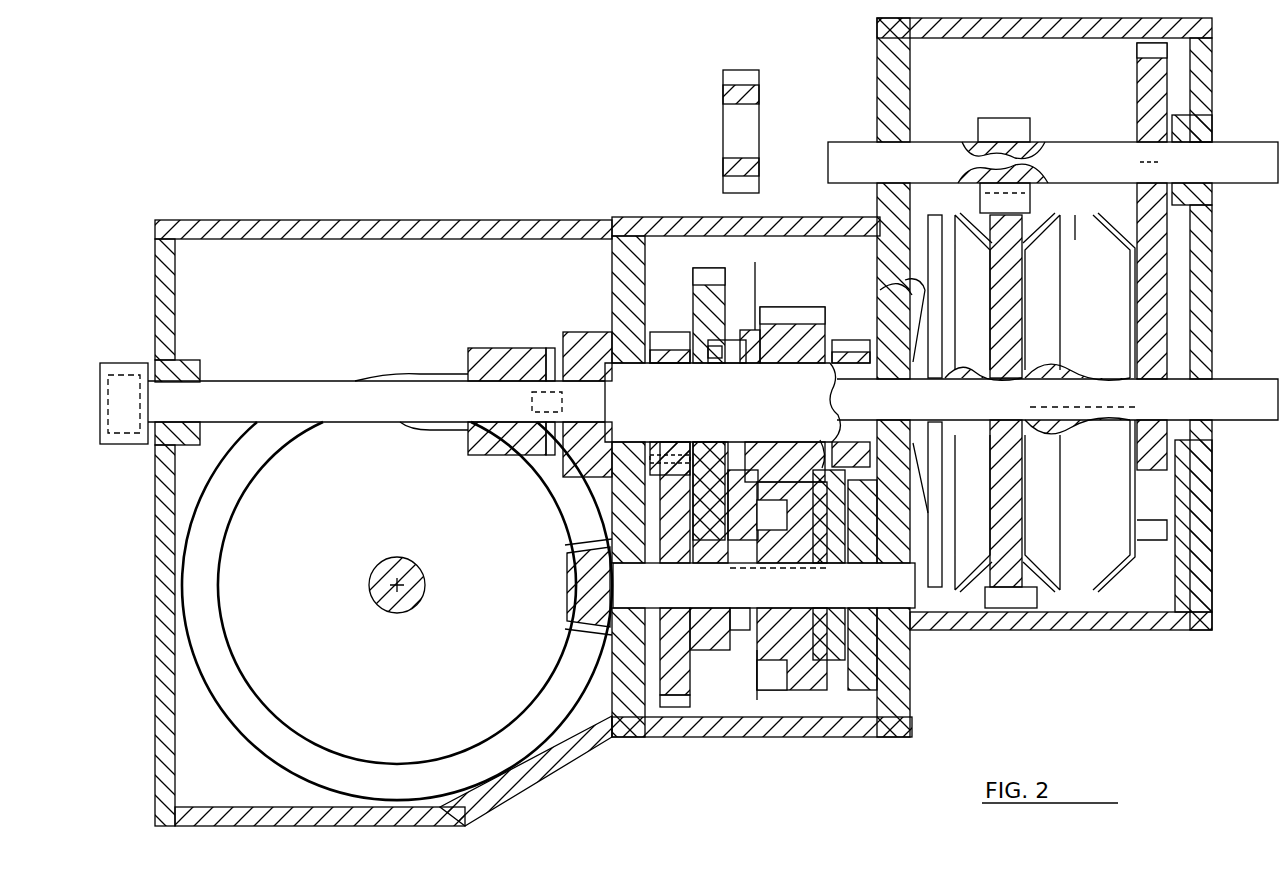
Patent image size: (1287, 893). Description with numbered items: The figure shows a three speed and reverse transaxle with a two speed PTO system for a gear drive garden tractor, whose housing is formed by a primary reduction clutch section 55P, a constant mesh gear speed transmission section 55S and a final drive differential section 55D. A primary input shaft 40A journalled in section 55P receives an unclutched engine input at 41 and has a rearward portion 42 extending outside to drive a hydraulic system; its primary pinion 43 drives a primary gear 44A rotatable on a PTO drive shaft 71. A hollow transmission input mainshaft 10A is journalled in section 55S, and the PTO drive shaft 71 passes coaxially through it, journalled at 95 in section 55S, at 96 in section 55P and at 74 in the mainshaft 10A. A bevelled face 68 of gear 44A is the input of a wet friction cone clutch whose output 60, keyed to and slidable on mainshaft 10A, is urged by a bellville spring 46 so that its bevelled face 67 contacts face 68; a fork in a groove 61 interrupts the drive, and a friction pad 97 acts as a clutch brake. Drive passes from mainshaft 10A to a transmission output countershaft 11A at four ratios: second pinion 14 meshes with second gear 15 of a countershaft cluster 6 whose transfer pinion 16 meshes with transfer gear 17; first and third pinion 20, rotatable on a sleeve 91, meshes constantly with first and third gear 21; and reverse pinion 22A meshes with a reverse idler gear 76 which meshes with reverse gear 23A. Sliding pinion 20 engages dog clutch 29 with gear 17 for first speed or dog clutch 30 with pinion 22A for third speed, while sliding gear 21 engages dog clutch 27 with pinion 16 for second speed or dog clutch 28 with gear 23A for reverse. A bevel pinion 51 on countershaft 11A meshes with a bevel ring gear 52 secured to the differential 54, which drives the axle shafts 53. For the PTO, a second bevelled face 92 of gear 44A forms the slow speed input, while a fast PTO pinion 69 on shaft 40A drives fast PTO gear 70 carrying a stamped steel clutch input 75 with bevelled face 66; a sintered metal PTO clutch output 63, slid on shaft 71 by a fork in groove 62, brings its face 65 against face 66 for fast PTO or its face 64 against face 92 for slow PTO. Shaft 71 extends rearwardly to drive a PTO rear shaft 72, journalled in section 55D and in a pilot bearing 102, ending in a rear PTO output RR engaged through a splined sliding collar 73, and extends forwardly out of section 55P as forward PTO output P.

The final drive differential section 55D is at (305, 225).
The rear PTO output RR is at (118, 444).
The PTO rear shaft 72 is at (245, 385).
The bevel ring gear 52 is at (525, 712).
The differential 54 is at (300, 735).
The axle shafts 53 is at (425, 585).
The bevel pinion 51 is at (560, 628).
The axially slidable collar 73 is at (495, 355).
The pilot bearing 102 is at (553, 403).
The journal in housing section 55S 95 is at (580, 340).
The constant mesh gear speed transmission section 55S is at (800, 735).
The hollow transmission input mainshaft 10A is at (722, 402).
The sleeve 91 is at (800, 365).
The dog clutch 30 is at (815, 448).
The dog clutch 29 is at (740, 365).
The second pinion 14 is at (667, 340).
The transfer gear 17 is at (700, 280).
The first and third pinion 20 is at (772, 315).
The reverse pinion 22A is at (848, 348).
The bellville spring 46 is at (878, 288).
The transmission output countershaft 11A is at (764, 585).
The countershaft cluster 6 is at (680, 565).
The second gear 15 is at (670, 712).
The transfer pinion 16 is at (700, 652).
The dog clutch 27 is at (738, 640).
The first and third gear 21 is at (795, 682).
The dog clutch 28 is at (838, 630).
The reverse gear 23A is at (860, 690).
The reverse idler gear 76 is at (748, 78).
The unclutched input 41 is at (1248, 140).
The rearward portion 42 is at (840, 142).
The primary input shaft 40A is at (1078, 155).
The primary pinion 43 is at (990, 125).
The groove 62 is at (1074, 215).
The fast PTO pinion 69 is at (1145, 65).
The primary reduction clutch section 55P is at (1208, 552).
The primary gear 44A is at (1000, 612).
The journal in housing section 55P 96 is at (1200, 375).
The PTO drive shaft 71 is at (1057, 399).
The forward PTO output P is at (1250, 422).
The friction pad 97 is at (880, 198).
The groove 61 is at (938, 215).
The transmission cone clutch output 60 is at (950, 292).
The journal in mainshaft 74 is at (980, 380).
The bevelled face 64 is at (1040, 248).
The PTO clutch output 63 is at (1088, 380).
The bevelled face 65 is at (1105, 240).
The bevelled face 67 is at (962, 565).
The bevelled face 68 is at (962, 575).
The second bevelled face 92 is at (1045, 582).
The bevelled face 66 is at (1132, 575).
The fast speed PTO clutch input 75 is at (1150, 530).
The fast PTO gear 70 is at (1152, 525).